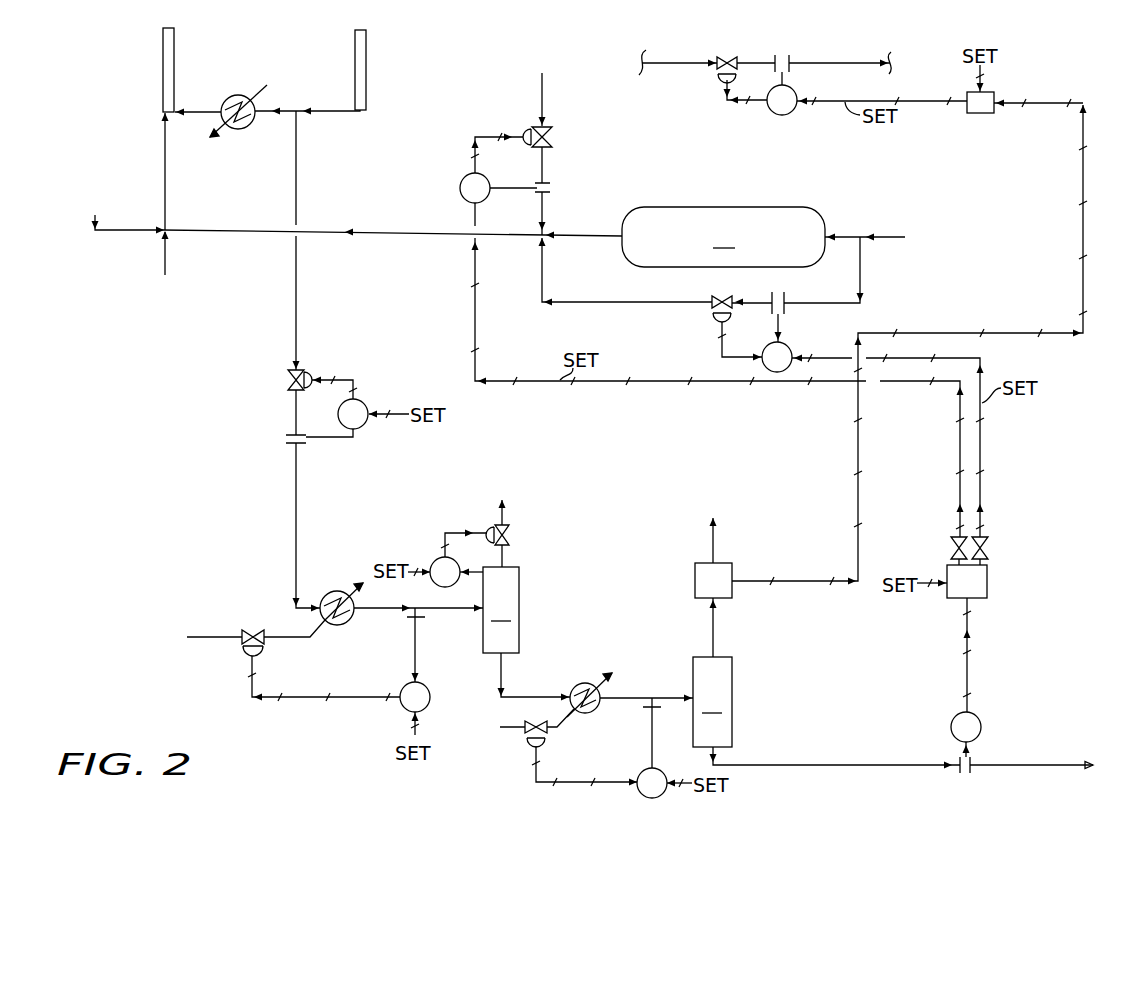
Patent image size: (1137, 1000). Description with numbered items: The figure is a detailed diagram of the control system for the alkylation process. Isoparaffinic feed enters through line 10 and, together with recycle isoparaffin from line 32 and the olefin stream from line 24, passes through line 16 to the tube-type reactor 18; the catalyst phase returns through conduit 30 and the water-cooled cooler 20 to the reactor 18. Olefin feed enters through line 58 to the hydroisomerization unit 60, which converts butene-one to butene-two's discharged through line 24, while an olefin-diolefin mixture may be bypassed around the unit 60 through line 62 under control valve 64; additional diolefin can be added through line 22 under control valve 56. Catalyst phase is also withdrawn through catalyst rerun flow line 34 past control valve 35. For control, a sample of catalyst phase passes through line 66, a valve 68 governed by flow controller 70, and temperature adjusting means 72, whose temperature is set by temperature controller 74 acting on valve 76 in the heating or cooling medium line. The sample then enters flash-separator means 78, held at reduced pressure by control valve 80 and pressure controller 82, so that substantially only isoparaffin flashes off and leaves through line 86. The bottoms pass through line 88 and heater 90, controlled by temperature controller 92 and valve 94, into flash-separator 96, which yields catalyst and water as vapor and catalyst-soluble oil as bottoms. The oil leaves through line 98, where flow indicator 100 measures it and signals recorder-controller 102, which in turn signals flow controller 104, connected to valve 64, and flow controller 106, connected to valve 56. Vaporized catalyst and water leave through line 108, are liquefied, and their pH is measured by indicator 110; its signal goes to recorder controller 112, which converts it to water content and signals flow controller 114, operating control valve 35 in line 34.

The isoparaffinic feed line 10 is at (152, 229).
The feed line to reactor 16 is at (163, 144).
The tube-type reactor 18 is at (177, 32).
The water-cooled cooler 20 is at (232, 97).
The diolefin feed line 22 is at (541, 86).
The olefin discharge line 24 is at (414, 232).
The catalyst phase conduit 30 is at (354, 66).
The recycle isoparaffin line 32 is at (163, 263).
The catalyst rerun flow line 34 is at (650, 66).
The control valve 35 is at (723, 56).
The control valve 56 is at (553, 138).
The olefin feed line 58 is at (890, 236).
The hydroisomerization unit 60 is at (723, 237).
The bypass line 62 is at (543, 265).
The control valve 64 is at (723, 296).
The catalyst sample line 66 is at (295, 200).
The valve 68 is at (290, 372).
The flow controller 70 is at (362, 402).
The temperature adjusting means 72 is at (349, 622).
The temperature controller 74 is at (400, 703).
The valve 76 is at (252, 629).
The flash-separator means 78 is at (501, 610).
The control valve 80 is at (510, 537).
The pressure controller 82 is at (435, 561).
The vaporized isoparaffin line 86 is at (508, 509).
The bottoms line 88 is at (497, 688).
The heater 90 is at (579, 686).
The temperature controller 92 is at (642, 772).
The valve 94 is at (526, 742).
The flash-separator 96 is at (712, 702).
The catalyst-soluble oil line 98 is at (815, 764).
The flow indicator 100 is at (978, 712).
The recorder-controller 102 is at (988, 585).
The flow controller 104 is at (790, 346).
The flow controller 106 is at (462, 178).
The vapor discharge line 108 is at (715, 638).
The pH indicator 110 is at (694, 566).
The recorder controller 112 is at (995, 92).
The flow controller 114 is at (772, 110).